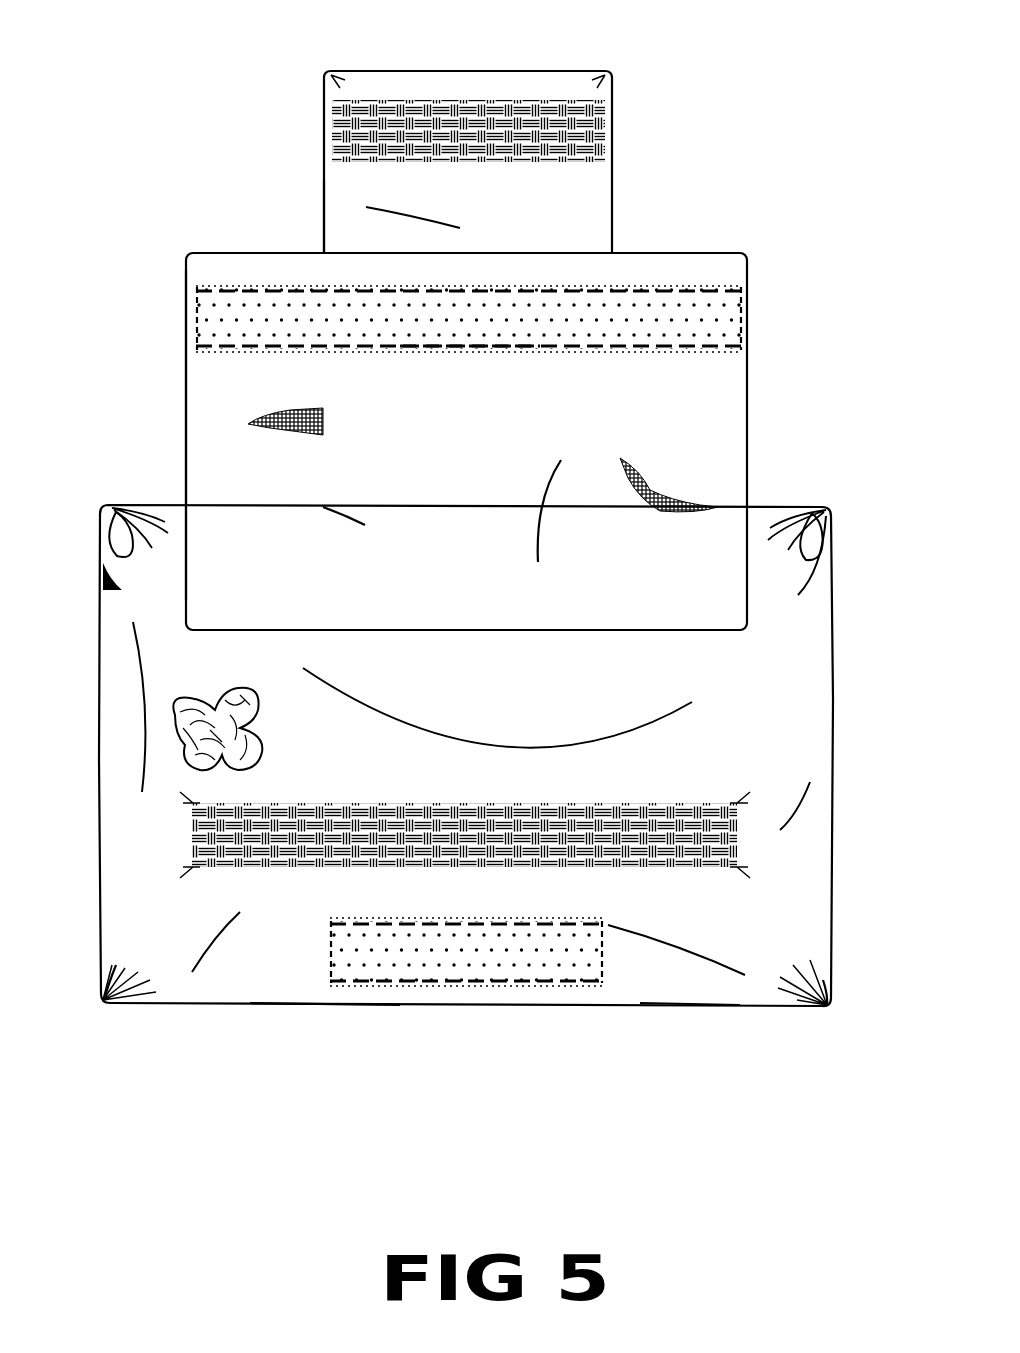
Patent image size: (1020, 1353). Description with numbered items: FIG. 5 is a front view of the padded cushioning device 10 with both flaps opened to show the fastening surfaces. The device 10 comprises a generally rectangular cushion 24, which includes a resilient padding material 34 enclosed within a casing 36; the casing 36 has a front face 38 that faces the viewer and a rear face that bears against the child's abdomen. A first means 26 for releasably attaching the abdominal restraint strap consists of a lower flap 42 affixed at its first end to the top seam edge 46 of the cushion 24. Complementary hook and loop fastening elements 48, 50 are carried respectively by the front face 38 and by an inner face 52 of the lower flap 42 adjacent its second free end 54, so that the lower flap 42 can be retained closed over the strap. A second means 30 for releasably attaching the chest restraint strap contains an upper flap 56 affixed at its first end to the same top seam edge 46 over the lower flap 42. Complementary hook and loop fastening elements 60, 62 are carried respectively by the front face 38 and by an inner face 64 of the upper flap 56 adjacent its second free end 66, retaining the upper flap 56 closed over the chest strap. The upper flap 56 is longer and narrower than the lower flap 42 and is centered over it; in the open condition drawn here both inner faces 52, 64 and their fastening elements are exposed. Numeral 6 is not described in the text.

The cushion body 6 is at (848, 735).
The padded cushioning device 10 is at (775, 361).
The cushion 24 is at (110, 498).
The first means 26 is at (174, 331).
The second means 30 is at (627, 184).
The resilient padding material 34 is at (238, 688).
The casing 36 is at (686, 993).
The front face 38 is at (305, 962).
The lower flap 42 is at (762, 310).
The top seam edge 46 is at (765, 505).
The hook and loop fastening element 48 is at (530, 805).
The hook and loop fastening element 50 is at (468, 322).
The inner face 52 is at (256, 397).
The second free end 54 is at (723, 253).
The upper flap 56 is at (311, 228).
The hook and loop fastening element 60 is at (378, 944).
The hook and loop fastening element 62 is at (605, 106).
The inner face 64 is at (382, 170).
The second free end 66 is at (405, 70).